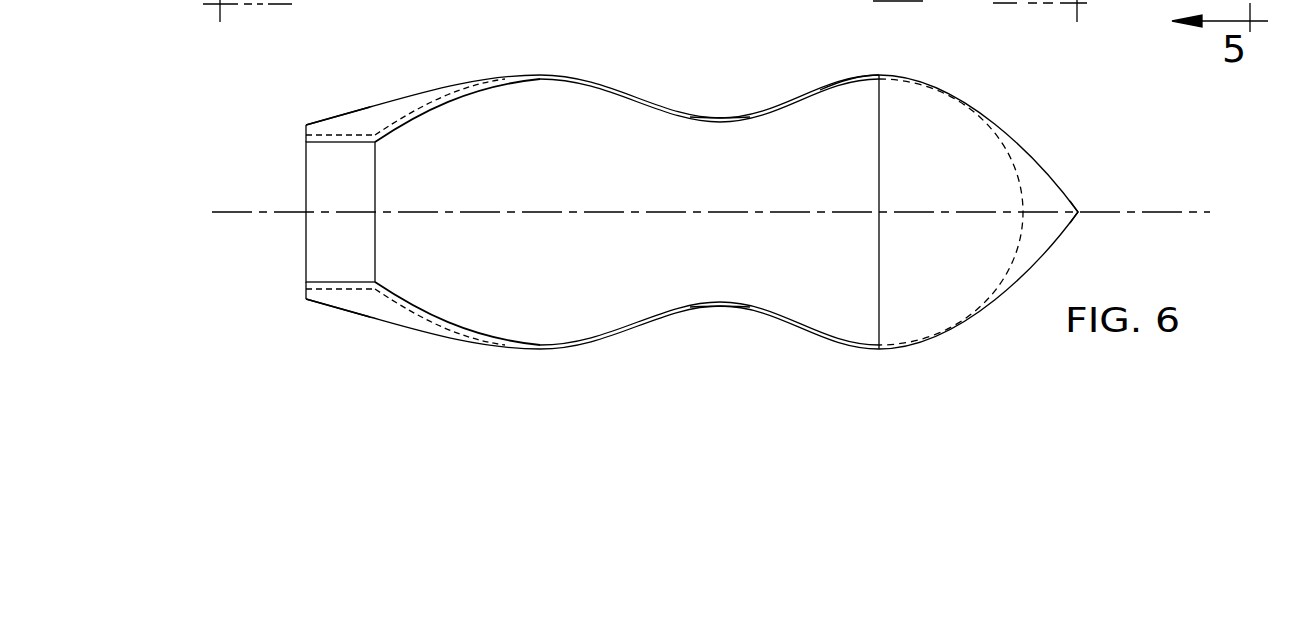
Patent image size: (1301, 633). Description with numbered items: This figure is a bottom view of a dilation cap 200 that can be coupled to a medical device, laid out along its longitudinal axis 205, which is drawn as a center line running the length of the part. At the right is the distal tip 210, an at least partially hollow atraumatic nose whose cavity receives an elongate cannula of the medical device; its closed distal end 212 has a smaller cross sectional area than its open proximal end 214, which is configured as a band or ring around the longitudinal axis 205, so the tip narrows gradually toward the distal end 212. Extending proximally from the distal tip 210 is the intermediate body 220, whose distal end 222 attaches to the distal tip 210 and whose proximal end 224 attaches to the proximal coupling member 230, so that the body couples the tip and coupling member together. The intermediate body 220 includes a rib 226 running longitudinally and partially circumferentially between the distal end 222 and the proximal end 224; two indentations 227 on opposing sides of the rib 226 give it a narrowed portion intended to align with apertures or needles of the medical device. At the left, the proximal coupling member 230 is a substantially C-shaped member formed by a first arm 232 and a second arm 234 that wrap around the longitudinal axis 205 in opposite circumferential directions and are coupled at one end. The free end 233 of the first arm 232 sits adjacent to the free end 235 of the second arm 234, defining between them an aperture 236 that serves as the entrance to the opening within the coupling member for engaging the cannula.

The dilation cap 200 is at (540, 50).
The longitudinal axis 205 is at (252, 213).
The distal tip 210 is at (1047, 135).
The distal end 212 is at (1080, 211).
The proximal end 214 is at (882, 97).
The intermediate body 220 is at (732, 96).
The distal end 222 is at (875, 73).
The proximal end 224 is at (379, 140).
The rib 226 is at (683, 262).
The indentations 227 is at (717, 117).
The proximal coupling member 230 is at (350, 100).
The first arm 232 is at (303, 126).
The free end 233 is at (342, 141).
The second arm 234 is at (305, 298).
The free end 235 is at (342, 283).
The aperture 236 is at (313, 184).